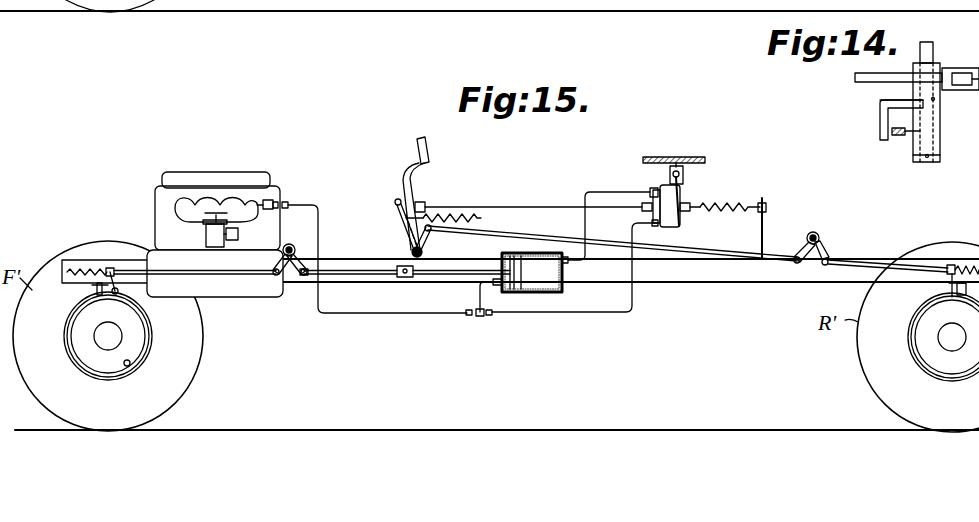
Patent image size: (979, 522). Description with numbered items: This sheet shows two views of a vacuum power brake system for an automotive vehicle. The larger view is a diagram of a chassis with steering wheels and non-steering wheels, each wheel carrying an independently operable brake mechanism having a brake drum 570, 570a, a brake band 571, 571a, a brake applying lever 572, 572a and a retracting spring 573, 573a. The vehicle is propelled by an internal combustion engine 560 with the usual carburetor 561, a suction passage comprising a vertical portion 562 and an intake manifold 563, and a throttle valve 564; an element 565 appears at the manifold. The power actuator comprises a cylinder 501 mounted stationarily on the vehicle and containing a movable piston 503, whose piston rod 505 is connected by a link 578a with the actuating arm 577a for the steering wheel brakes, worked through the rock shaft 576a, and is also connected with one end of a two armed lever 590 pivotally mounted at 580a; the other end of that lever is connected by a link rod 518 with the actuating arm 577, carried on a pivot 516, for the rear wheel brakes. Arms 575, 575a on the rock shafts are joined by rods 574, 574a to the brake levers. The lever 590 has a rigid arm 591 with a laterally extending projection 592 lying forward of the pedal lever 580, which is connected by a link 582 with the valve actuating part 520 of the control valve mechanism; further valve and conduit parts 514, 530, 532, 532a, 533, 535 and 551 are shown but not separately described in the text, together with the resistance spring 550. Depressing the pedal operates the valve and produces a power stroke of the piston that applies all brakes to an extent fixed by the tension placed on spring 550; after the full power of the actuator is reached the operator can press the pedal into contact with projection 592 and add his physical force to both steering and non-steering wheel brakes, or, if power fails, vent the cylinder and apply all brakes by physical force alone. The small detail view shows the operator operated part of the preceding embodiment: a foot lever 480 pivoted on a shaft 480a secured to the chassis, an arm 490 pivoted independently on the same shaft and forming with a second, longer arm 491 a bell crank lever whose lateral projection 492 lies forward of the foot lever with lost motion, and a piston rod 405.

In FIG. 14, the piston rod 405 is at (888, 72).
In FIG. 14, the foot lever 480 is at (899, 136).
In FIG. 14, the shaft 480a is at (926, 44).
In FIG. 14, the arm 490 is at (947, 70).
In FIG. 14, the second arm 491 is at (905, 100).
In FIG. 14, the laterally extending projection 492 is at (880, 124).
In FIG. 15, the cylinder 501 is at (539, 290).
In FIG. 15, the piston 503 is at (512, 292).
In FIG. 15, the piston rod 505 is at (457, 276).
In FIG. 15, the conduit 514 is at (590, 190).
In FIG. 15, the rear lever pivot 516 is at (815, 232).
In FIG. 15, the connecting rod 518 is at (722, 258).
In FIG. 15, the valve actuating part 520 is at (657, 187).
In FIG. 15, the valve lever 530 is at (684, 193).
In FIG. 15, the conduit 532 is at (634, 300).
In FIG. 15, the conduit junction 532a is at (477, 310).
In FIG. 15, the fixed bracket 533 is at (686, 156).
In FIG. 15, the lever pivot 535 is at (688, 176).
In FIG. 15, the spring 550 is at (718, 211).
In FIG. 15, the spring anchor 551 is at (763, 202).
In FIG. 15, the internal combustion engine 560 is at (205, 172).
In FIG. 15, the carburetor 561 is at (238, 234).
In FIG. 15, the vertical portion 562 is at (205, 208).
In FIG. 15, the intake manifold 563 is at (232, 201).
In FIG. 15, the throttle valve 564 is at (206, 238).
In FIG. 15, the manifold fitting 565 is at (270, 198).
In FIG. 15, the brake drum 570 is at (916, 343).
In FIG. 15, the brake drum 570a is at (130, 368).
In FIG. 15, the brake band 571 is at (916, 352).
In FIG. 15, the brake band 571a is at (148, 360).
In FIG. 15, the brake applying lever 572 is at (952, 262).
In FIG. 15, the brake applying lever 572a is at (64, 270).
In FIG. 15, the retracting spring 573 is at (957, 285).
In FIG. 15, the retracting spring 573a is at (84, 268).
In FIG. 15, the rod 574 is at (884, 262).
In FIG. 15, the rod 574a is at (122, 268).
In FIG. 15, the arm 575 is at (824, 248).
In FIG. 15, the arm 575a is at (280, 268).
In FIG. 15, the rock shaft 576a is at (290, 244).
In FIG. 15, the actuating arm 577 is at (800, 252).
In FIG. 15, the actuating arm 577a is at (297, 276).
In FIG. 15, the link 578a is at (338, 292).
In FIG. 15, the pedal lever 580 is at (410, 174).
In FIG. 15, the pivot 580a is at (424, 238).
In FIG. 15, the link 582 is at (518, 206).
In FIG. 15, the two armed lever 590 is at (410, 255).
In FIG. 15, the rigid arm 591 is at (400, 218).
In FIG. 15, the laterally extending projection 592 is at (398, 199).